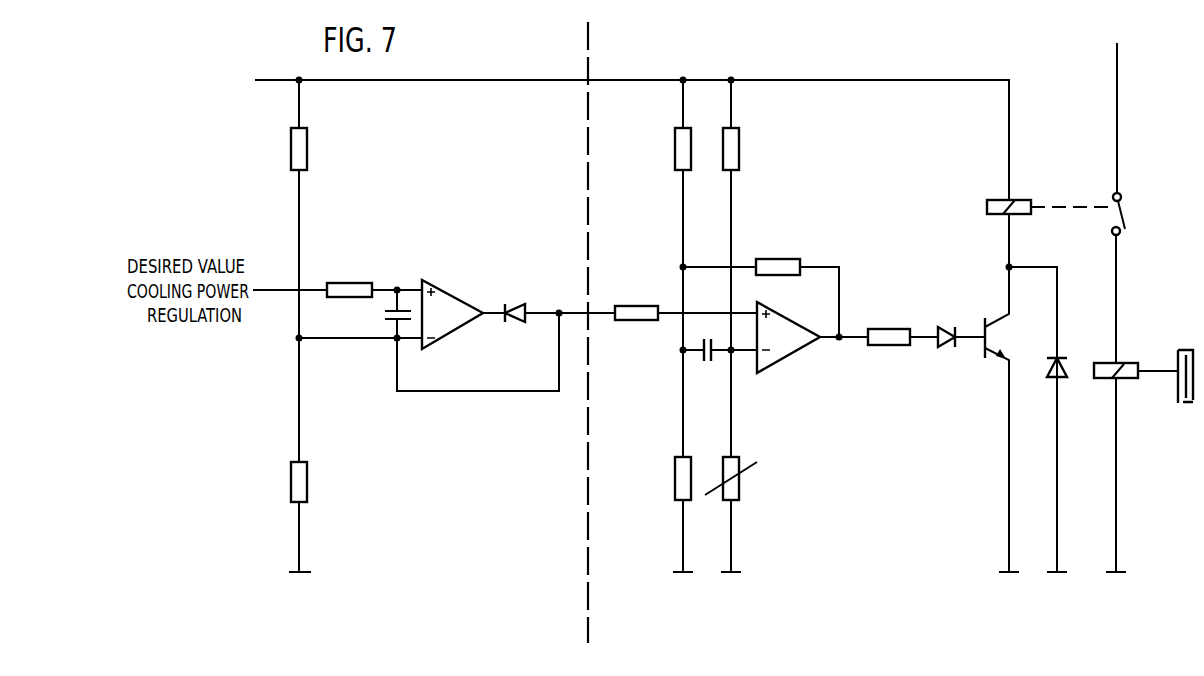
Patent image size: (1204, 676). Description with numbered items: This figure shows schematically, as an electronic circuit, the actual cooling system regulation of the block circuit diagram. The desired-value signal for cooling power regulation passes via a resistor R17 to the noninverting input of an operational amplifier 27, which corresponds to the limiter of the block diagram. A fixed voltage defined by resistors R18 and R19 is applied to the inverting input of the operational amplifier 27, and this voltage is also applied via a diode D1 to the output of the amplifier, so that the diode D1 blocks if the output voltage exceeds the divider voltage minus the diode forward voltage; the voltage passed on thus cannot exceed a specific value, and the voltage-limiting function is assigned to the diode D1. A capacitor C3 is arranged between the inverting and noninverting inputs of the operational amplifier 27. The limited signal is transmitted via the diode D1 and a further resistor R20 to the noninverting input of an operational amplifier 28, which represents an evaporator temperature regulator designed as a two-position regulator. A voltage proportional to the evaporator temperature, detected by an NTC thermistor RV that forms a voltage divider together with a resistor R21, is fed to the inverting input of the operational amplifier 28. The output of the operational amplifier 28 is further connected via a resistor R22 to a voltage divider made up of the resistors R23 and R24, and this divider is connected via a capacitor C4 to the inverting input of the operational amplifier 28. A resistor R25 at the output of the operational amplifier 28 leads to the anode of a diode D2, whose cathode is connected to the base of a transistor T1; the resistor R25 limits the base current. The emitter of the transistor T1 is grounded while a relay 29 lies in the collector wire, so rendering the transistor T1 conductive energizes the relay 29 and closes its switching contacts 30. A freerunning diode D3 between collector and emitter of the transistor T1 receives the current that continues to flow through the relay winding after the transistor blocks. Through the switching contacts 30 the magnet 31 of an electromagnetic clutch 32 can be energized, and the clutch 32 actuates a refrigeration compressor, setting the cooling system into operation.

The resistor R18 is at (307, 147).
The resistor R19 is at (307, 477).
The resistor R17 is at (349, 283).
The capacitor C3 is at (388, 309).
The operational amplifier 27 is at (447, 300).
The diode D1 is at (519, 306).
The resistor R20 is at (640, 321).
The resistor R23 is at (675, 143).
The resistor R21 is at (739, 147).
The resistor R22 is at (778, 259).
The capacitor C4 is at (707, 362).
The operational amplifier 28 is at (788, 347).
The resistor R24 is at (675, 480).
The NTC thermistor RV is at (739, 486).
The resistor R25 is at (893, 345).
The diode D2 is at (945, 347).
The transistor T1 is at (998, 356).
The freerunning diode D3 is at (1046, 375).
The relay 29 is at (1024, 200).
The switching contacts 30 is at (1124, 211).
The magnet 31 is at (1121, 378).
The electromagnetic clutch 32 is at (1183, 403).